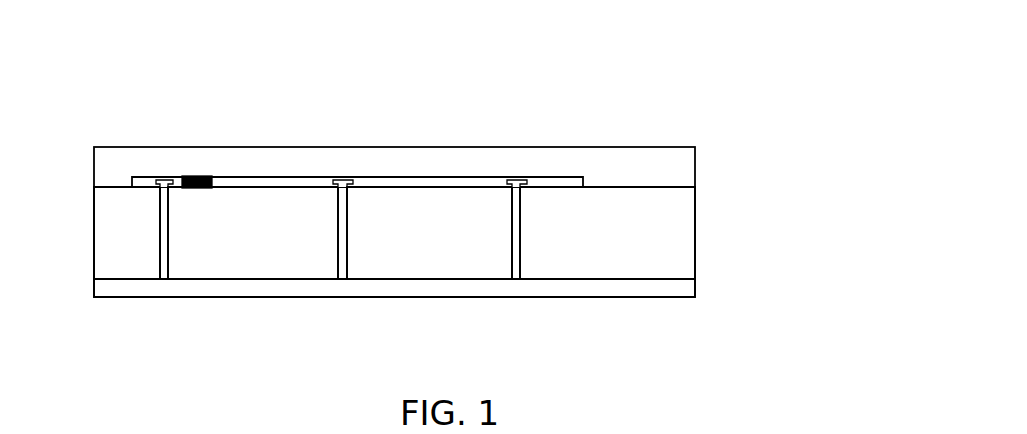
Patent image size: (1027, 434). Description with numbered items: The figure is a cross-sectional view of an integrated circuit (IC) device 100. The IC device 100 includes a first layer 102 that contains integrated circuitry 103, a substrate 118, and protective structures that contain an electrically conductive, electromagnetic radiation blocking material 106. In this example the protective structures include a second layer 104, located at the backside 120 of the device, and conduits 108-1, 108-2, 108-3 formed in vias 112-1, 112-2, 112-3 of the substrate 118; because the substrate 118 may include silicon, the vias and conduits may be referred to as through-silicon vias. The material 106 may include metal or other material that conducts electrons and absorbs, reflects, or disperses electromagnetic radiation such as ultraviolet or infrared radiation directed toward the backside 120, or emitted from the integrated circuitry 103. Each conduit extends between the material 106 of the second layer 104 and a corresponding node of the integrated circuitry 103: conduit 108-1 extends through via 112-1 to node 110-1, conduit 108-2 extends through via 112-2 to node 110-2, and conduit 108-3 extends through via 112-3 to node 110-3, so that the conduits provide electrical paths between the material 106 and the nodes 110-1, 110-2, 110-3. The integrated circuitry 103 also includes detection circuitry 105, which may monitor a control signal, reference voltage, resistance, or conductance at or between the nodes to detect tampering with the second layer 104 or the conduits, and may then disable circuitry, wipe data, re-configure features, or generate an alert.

The integrated circuit (IC) device 100 is at (120, 30).
The first layer 102 is at (695, 154).
The integrated circuitry 103 is at (573, 177).
The second layer 104 is at (695, 287).
The detection circuitry 105 is at (202, 177).
The electrically conductive, electromagnetic radiation blocking material 106 is at (562, 288).
The conduit 108-1 is at (169, 205).
The conduit 108-2 is at (348, 205).
The conduit 108-3 is at (523, 201).
The node 110-1 is at (171, 186).
The node 110-2 is at (347, 186).
The node 110-3 is at (522, 186).
The via 112-1 is at (159, 260).
The via 112-2 is at (337, 260).
The via 112-3 is at (511, 260).
The substrate 118 is at (703, 188).
The backside 120 is at (380, 297).